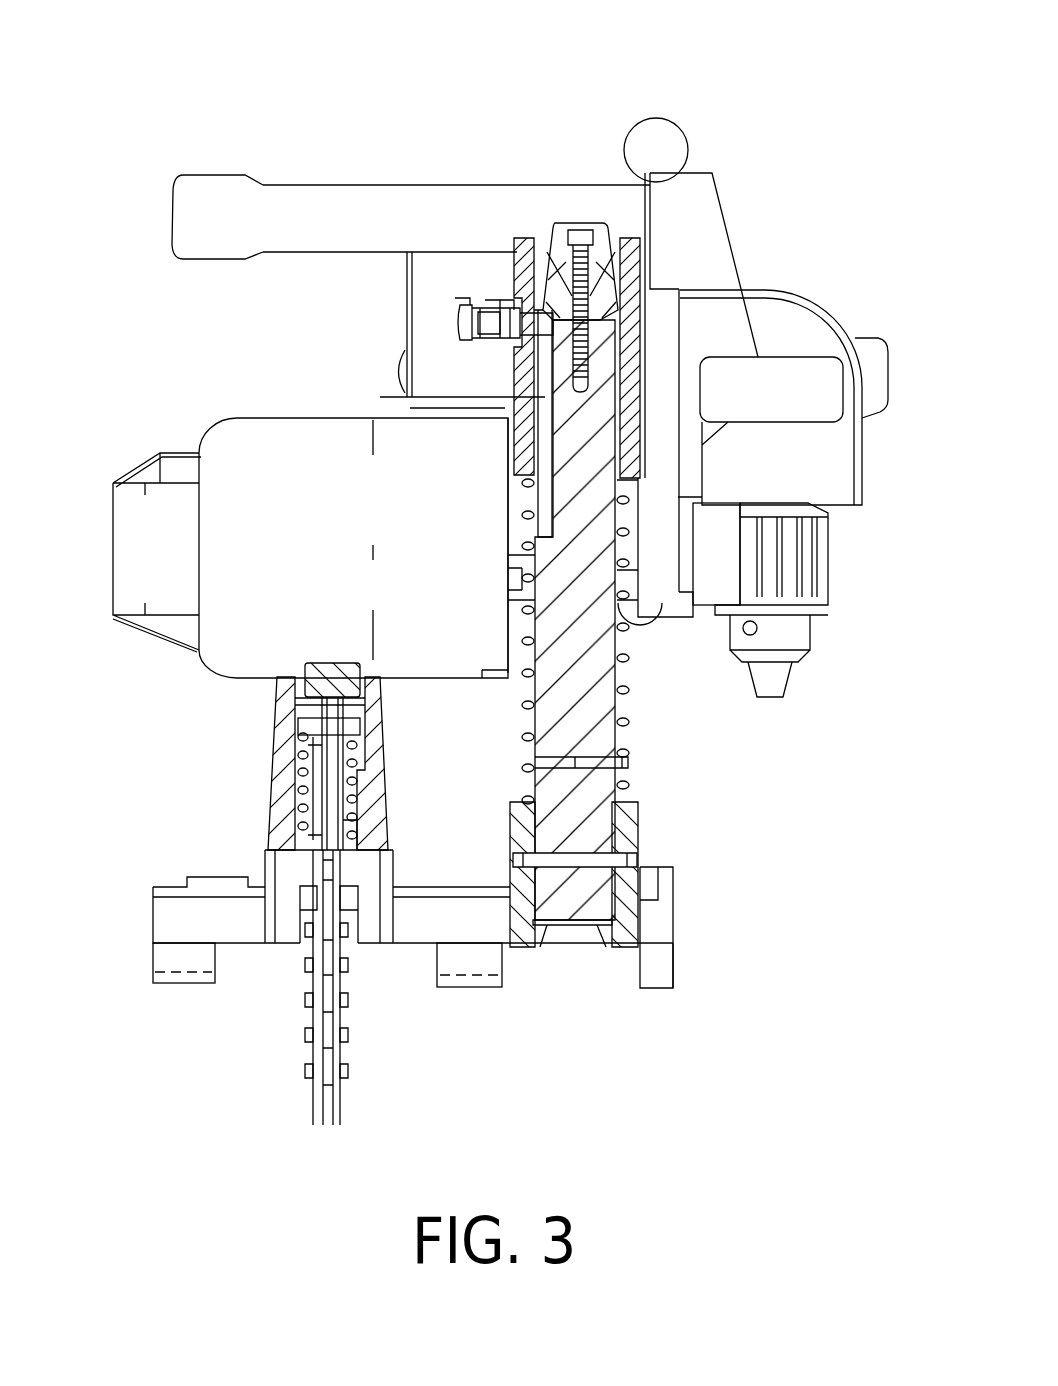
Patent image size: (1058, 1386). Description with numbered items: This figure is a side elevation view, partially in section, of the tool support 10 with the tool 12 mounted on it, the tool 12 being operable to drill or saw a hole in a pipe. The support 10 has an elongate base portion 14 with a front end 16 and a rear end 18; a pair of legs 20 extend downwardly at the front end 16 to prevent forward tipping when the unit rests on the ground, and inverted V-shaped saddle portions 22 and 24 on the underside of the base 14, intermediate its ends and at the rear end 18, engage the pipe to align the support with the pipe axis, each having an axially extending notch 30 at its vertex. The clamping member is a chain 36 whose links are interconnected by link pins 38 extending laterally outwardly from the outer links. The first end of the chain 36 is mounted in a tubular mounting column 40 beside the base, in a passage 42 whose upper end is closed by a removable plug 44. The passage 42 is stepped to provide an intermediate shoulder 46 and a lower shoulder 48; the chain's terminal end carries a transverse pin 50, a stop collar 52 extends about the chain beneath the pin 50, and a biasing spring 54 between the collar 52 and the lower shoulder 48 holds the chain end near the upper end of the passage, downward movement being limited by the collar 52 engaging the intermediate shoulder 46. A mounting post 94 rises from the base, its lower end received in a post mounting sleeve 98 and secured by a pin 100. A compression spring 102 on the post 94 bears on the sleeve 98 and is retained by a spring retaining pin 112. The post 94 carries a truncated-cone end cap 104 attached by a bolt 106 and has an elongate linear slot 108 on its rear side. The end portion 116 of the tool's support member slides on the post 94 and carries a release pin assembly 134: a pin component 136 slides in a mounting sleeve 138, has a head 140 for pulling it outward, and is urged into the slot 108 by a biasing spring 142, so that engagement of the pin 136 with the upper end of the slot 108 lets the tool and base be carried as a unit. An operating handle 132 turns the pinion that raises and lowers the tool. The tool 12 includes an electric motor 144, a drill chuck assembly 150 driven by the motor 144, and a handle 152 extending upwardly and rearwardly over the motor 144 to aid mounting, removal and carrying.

The tool support 10 is at (818, 817).
The tool 12 is at (830, 205).
The base portion 14 is at (440, 885).
The front end 16 is at (718, 941).
The rear end 18 is at (150, 912).
The legs 20 is at (640, 968).
The saddle portion 22 is at (488, 990).
The saddle portion 24 is at (165, 985).
The notch 30 is at (187, 975).
The chain 36 is at (270, 1116).
The link pins 38 is at (304, 1001).
The mounting column 40 is at (272, 751).
The passage 42 is at (372, 740).
The plug 44 is at (320, 661).
The intermediate shoulder 46 is at (380, 778).
The lower shoulder 48 is at (352, 832).
The pin 50 is at (308, 716).
The stop collar 52 is at (372, 718).
The biasing spring 54 is at (292, 757).
The post 94 is at (633, 676).
The post mounting sleeve 98 is at (640, 836).
The pin 100 is at (640, 858).
The compression spring 102 is at (628, 728).
The end cap 104 is at (551, 218).
The bolt 106 is at (580, 227).
The slot 108 is at (540, 396).
The spring retaining pin 112 is at (640, 763).
The end portion 116 is at (645, 318).
The operating handle 132 is at (656, 118).
The release pin assembly 134 is at (462, 297).
The pin component 136 is at (492, 306).
The mounting sleeve 138 is at (496, 298).
The head 140 is at (452, 311).
The biasing spring 142 is at (462, 335).
The electric motor 144 is at (235, 417).
The drill chuck assembly 150 is at (862, 634).
The handle 152 is at (281, 183).